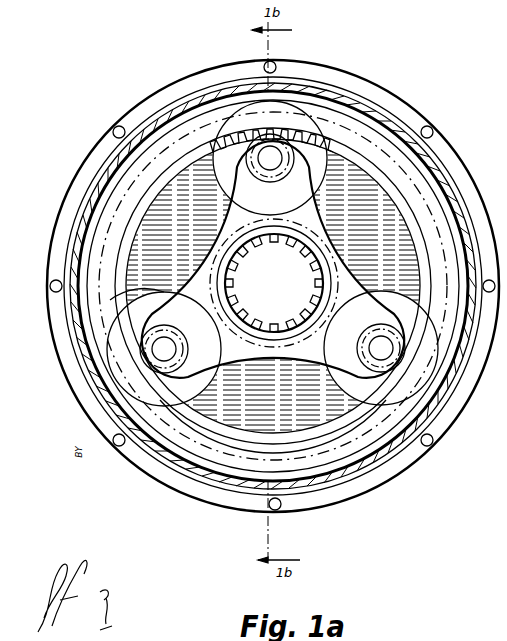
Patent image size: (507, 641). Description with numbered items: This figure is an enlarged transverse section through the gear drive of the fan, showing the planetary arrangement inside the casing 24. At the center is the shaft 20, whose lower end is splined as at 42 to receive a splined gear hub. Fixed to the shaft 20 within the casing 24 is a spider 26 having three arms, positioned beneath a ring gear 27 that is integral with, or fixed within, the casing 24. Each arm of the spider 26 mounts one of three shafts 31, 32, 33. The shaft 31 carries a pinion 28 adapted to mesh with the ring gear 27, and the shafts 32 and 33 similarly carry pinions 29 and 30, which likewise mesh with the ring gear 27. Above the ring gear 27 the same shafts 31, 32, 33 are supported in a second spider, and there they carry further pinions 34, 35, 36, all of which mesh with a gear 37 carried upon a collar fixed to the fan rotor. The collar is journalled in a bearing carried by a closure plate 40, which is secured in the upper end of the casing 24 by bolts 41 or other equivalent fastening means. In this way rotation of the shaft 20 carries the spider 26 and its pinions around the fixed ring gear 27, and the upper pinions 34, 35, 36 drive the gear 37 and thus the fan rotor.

The shaft 20 is at (274, 283).
The casing 24 is at (437, 175).
The spider 26 is at (273, 259).
The ring gear 27 is at (296, 128).
The pinion 28 is at (332, 147).
The pinion 29 is at (352, 311).
The pinion 30 is at (187, 306).
The shaft 31 is at (270, 158).
The shaft 32 is at (381, 348).
The shaft 33 is at (164, 349).
The pinion 34 is at (218, 161).
The pinion 35 is at (352, 398).
The pinion 36 is at (147, 300).
The gear 37 is at (283, 374).
The closure plate 40 is at (194, 224).
The bolts 41 is at (217, 72).
The splined portion 42 is at (312, 266).